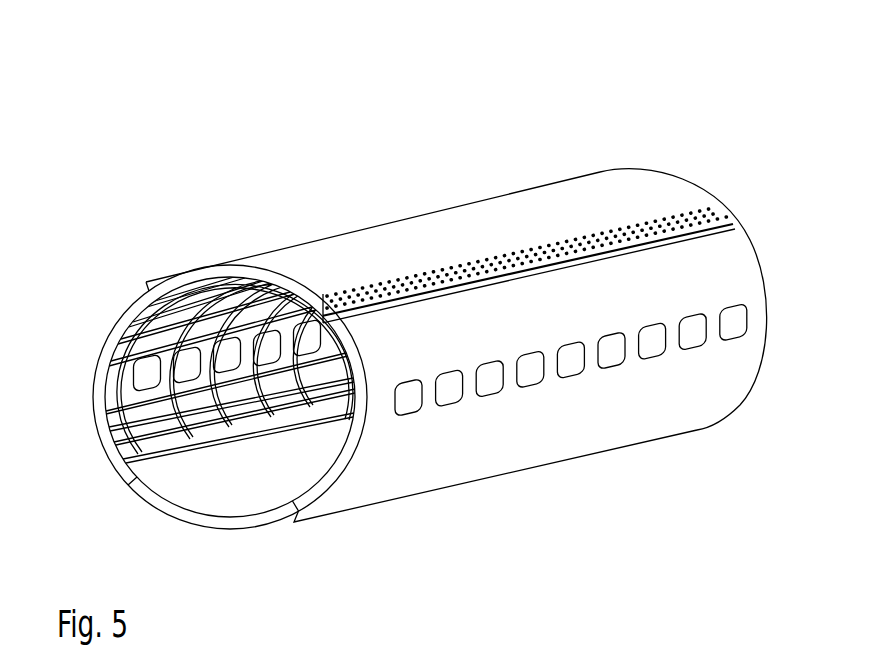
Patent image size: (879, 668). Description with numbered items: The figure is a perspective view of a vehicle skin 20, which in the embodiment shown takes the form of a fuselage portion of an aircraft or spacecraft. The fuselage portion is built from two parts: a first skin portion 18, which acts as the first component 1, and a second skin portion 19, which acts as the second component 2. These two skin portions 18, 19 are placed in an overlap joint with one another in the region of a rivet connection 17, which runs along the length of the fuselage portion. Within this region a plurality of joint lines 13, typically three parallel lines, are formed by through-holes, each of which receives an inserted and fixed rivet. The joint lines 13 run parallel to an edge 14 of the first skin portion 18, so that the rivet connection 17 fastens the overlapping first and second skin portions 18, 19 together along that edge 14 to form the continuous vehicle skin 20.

The vehicle skin 20 is at (663, 88).
The first component 1 is at (346, 350).
The first skin portion 18 is at (350, 247).
The second component 2 is at (520, 435).
The second skin portion 19 is at (400, 478).
The rivet connection 17 is at (468, 250).
The joint lines 13 is at (735, 214).
The edge 14 is at (723, 232).